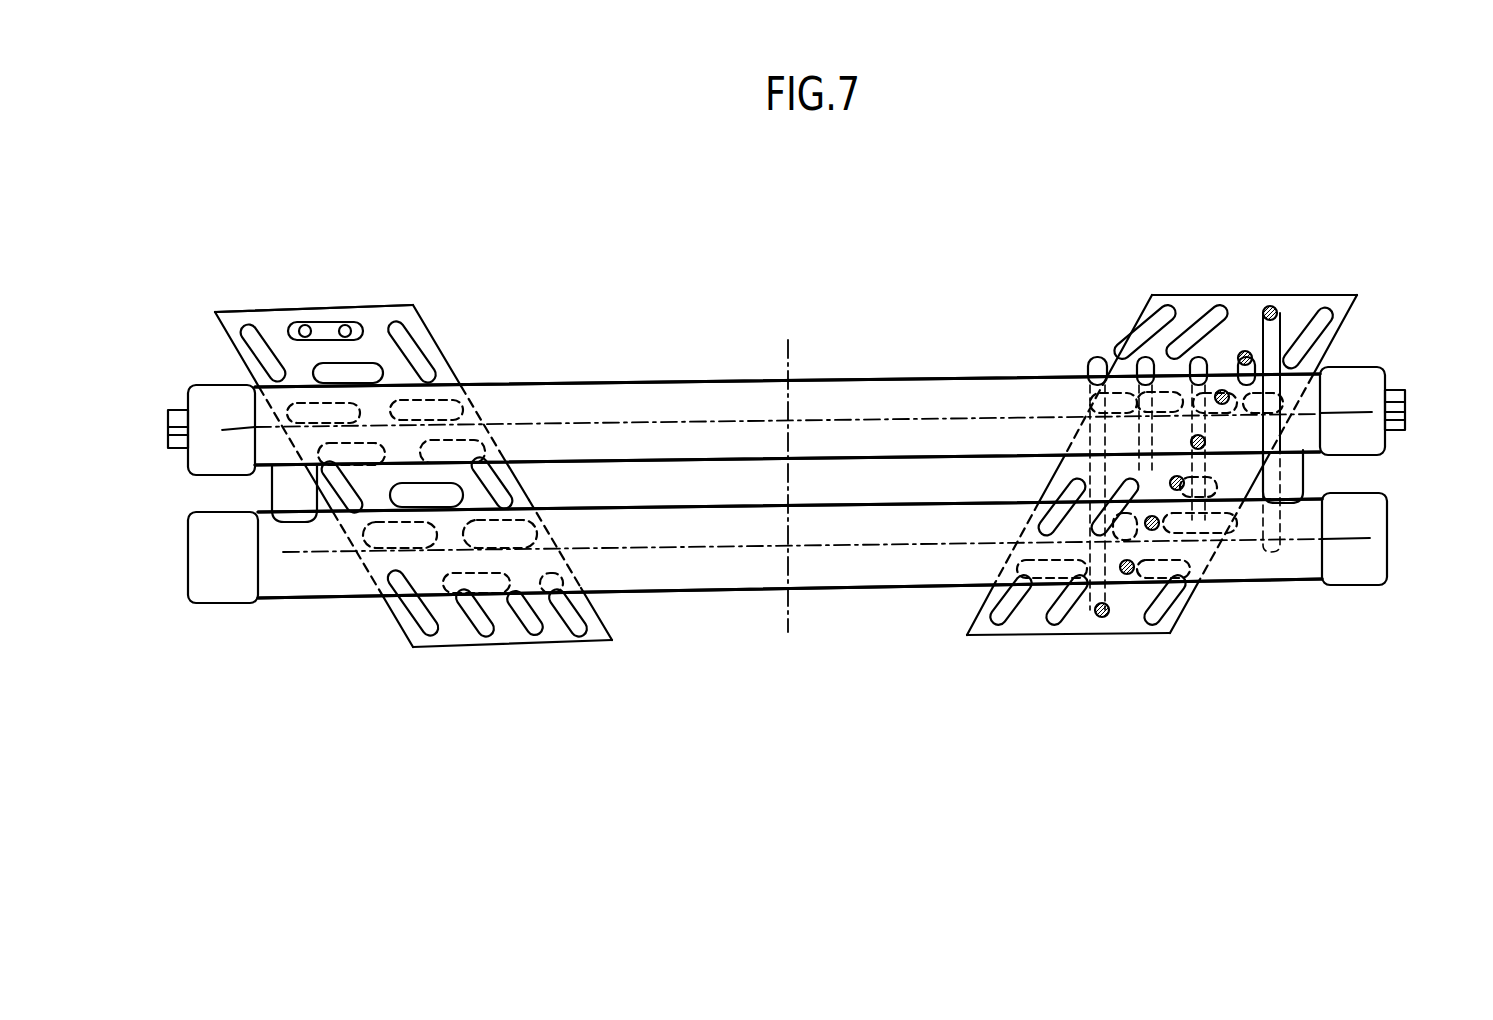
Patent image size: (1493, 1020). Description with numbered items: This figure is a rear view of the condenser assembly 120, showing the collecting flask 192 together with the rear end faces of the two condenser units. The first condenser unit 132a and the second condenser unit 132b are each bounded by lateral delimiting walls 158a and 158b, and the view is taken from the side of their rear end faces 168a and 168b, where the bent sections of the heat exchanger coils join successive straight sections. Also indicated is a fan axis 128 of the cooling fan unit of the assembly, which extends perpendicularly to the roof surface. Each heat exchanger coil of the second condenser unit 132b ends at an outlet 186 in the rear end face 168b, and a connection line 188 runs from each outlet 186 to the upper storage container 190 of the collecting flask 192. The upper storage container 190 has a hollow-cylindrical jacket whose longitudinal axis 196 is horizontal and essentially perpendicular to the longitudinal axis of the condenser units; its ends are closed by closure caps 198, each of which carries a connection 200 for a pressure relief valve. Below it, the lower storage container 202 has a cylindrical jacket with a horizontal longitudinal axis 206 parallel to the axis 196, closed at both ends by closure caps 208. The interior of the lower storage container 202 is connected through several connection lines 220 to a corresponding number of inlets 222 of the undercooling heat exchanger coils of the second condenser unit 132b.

The condenser assembly 120 is at (602, 378).
The fan axis 128 is at (789, 345).
The first condenser unit 132a is at (243, 290).
The second condenser unit 132b is at (1343, 278).
The lateral delimiting wall 158a is at (215, 323).
The lateral delimiting wall 158b is at (1140, 315).
The rear end face 168a is at (380, 318).
The rear end face 168b is at (1238, 305).
The outlet 186 is at (1246, 350).
The connection line 188 is at (1123, 343).
The upper storage container 190 is at (913, 393).
The collecting flask 192 is at (738, 601).
The longitudinal axis 196 is at (818, 418).
The closure cap 198 is at (210, 395).
The connection for pressure relief valve 200 is at (178, 412).
The lower storage container 202 is at (623, 578).
The longitudinal axis 206 is at (880, 547).
The closure cap 208 is at (213, 592).
The connection line 220 is at (1282, 333).
The inlet 222 is at (1272, 306).